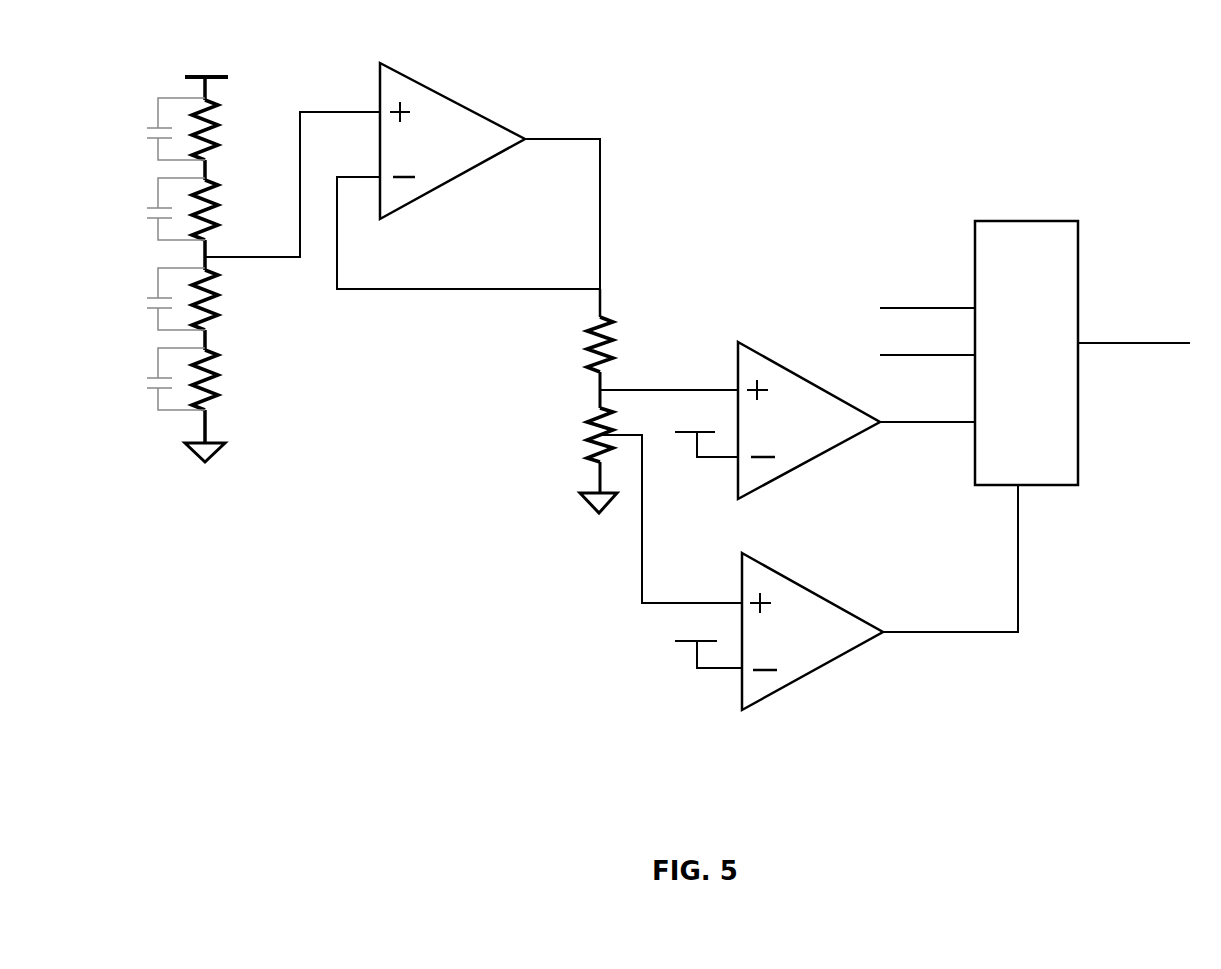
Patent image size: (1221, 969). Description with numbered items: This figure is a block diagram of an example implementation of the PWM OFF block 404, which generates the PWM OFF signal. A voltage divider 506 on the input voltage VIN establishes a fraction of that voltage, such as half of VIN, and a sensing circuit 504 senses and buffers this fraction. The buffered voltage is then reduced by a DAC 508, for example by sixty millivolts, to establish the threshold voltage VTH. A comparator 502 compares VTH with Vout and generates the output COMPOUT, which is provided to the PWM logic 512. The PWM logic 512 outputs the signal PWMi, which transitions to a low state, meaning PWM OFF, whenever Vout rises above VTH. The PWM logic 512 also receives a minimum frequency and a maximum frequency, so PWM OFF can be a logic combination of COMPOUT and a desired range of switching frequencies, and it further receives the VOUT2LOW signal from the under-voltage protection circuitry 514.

The PWM OFF block 404 is at (790, 213).
The comparator 502 is at (835, 457).
The sensing circuit 504 is at (503, 115).
The voltage divider 506 is at (232, 311).
The DAC 508 is at (548, 364).
The PWM logic 512 is at (1083, 443).
The under-voltage protection circuitry 514 is at (828, 672).